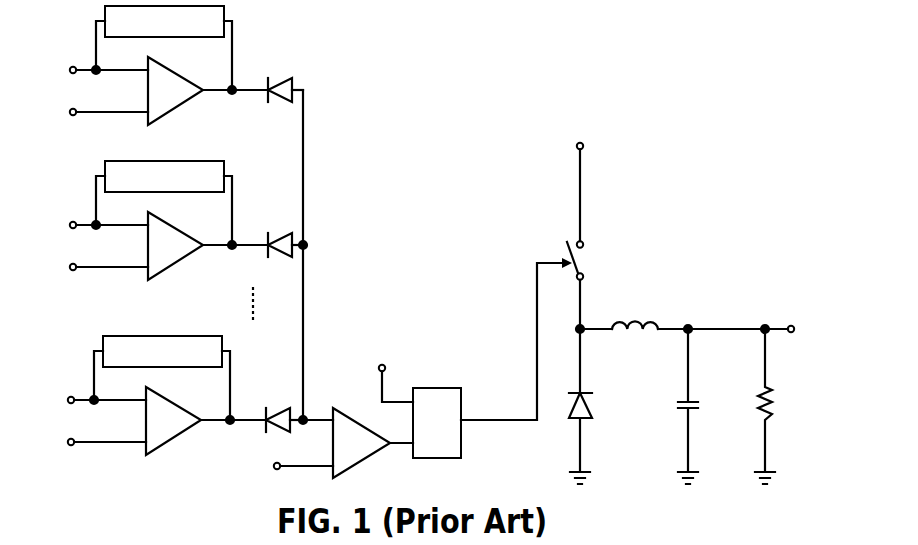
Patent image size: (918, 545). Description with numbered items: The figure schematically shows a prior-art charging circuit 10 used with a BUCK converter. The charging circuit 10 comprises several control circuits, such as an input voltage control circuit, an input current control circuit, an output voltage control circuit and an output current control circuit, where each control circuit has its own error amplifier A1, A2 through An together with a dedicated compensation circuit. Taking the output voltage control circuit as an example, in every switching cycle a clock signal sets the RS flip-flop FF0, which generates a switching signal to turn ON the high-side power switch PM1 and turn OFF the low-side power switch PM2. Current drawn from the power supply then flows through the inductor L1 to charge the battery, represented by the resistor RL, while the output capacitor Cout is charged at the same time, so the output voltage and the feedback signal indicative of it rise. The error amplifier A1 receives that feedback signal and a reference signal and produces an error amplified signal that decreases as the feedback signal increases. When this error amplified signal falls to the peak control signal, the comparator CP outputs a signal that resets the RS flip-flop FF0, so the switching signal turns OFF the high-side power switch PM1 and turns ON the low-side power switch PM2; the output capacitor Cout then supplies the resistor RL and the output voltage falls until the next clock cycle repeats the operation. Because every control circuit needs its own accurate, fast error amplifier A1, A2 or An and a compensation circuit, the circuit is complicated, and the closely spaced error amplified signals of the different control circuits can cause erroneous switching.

The charging circuit 10 is at (413, 245).
The error amplifier A1 is at (161, 65).
The error amplifier A2 is at (161, 220).
The error amplifier An is at (160, 395).
The comparator CP is at (330, 442).
The RS flip-flop FF0 is at (469, 358).
The high-side power switch PM1 is at (597, 224).
The low-side power switch PM2 is at (604, 406).
The inductor L1 is at (634, 315).
The output capacitor Cout is at (710, 406).
The resistor RL is at (777, 406).